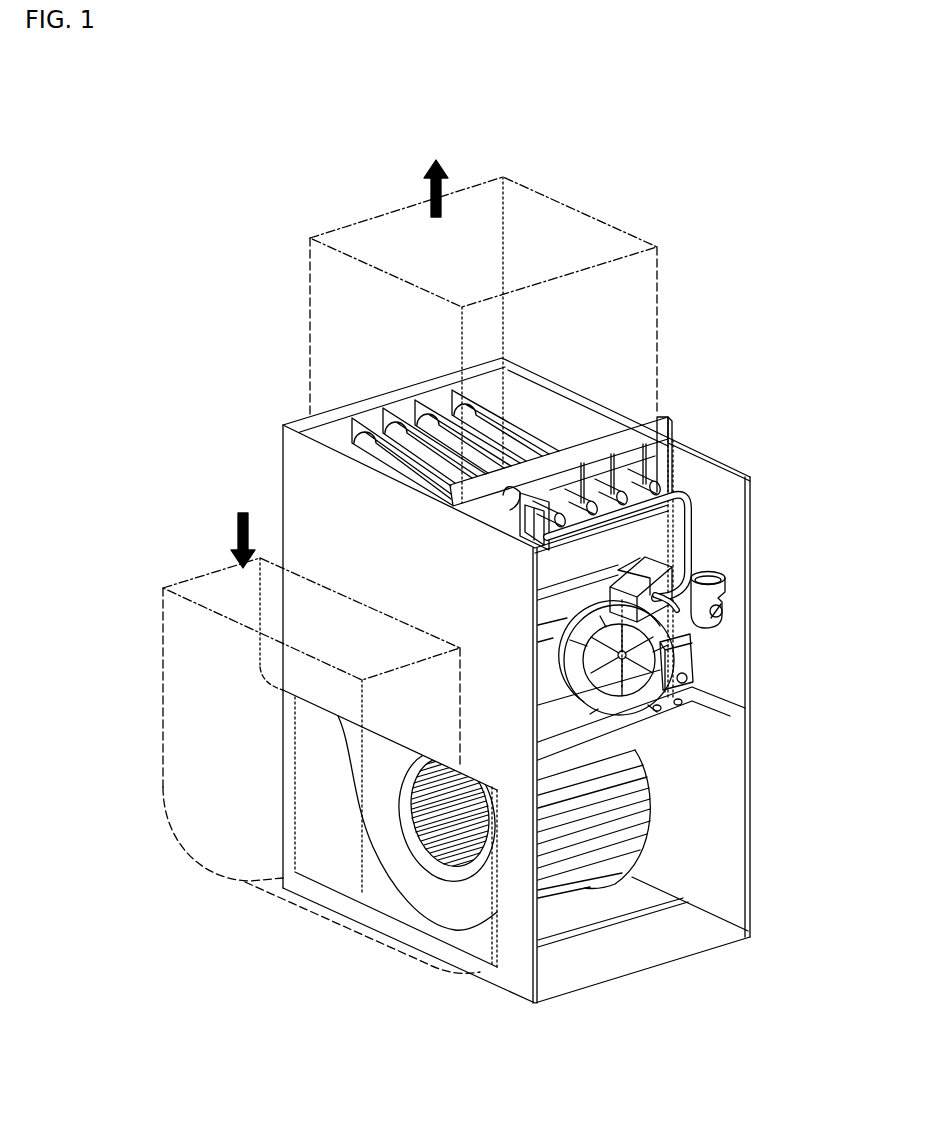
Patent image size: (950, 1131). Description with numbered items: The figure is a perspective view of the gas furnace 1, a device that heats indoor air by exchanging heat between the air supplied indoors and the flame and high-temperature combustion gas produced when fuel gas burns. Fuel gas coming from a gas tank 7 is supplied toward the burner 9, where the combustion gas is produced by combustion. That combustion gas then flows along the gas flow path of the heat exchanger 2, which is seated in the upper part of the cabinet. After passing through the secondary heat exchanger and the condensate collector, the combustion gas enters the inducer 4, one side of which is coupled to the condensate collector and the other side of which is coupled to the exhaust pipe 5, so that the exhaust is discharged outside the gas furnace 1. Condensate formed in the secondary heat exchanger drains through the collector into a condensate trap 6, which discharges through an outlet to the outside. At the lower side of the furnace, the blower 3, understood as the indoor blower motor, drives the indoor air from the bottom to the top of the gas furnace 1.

The gas furnace 1 is at (194, 111).
The heat exchanger 2 is at (380, 450).
The blower 3 is at (470, 895).
The inducer 4 is at (633, 667).
The exhaust pipe 5 is at (718, 610).
The condensate trap 6 is at (697, 653).
The gas tank 7 is at (653, 593).
The burner 9 is at (653, 470).